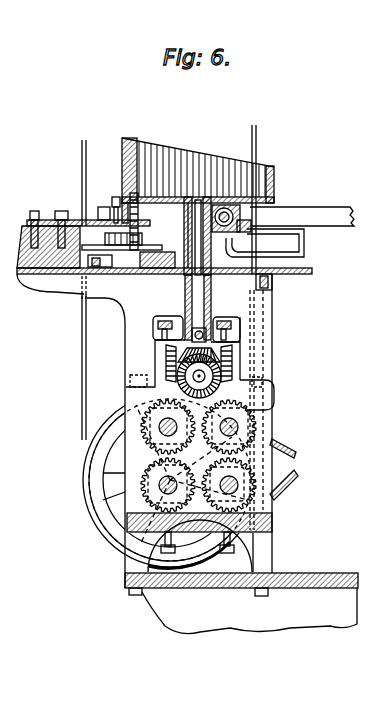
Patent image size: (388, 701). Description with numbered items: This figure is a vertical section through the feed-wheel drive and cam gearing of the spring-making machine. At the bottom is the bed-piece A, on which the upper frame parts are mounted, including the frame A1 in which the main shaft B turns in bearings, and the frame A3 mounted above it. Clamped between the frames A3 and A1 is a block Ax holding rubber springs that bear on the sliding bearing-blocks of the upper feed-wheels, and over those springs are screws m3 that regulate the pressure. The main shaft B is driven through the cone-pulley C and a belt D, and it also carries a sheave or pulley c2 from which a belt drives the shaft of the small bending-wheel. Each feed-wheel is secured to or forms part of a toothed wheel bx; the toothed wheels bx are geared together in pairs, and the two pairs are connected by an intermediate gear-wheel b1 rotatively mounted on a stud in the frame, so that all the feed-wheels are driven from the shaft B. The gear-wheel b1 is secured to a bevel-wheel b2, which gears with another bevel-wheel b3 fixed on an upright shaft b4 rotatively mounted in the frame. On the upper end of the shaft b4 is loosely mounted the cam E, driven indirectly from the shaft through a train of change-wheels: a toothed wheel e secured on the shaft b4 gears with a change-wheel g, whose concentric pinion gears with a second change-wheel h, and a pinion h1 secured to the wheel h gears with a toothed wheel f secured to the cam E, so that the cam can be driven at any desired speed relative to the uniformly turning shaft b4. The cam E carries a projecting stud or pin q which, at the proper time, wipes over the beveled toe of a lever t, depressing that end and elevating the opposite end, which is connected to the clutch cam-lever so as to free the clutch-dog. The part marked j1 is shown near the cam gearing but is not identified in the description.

The cam E is at (198, 200).
The lever t is at (302, 208).
The toothed wheel f is at (249, 229).
The toothed wheel e is at (244, 250).
The change-wheel g is at (164, 249).
The change-wheel h is at (128, 250).
The pinion h1 is at (150, 221).
The stud or pin q is at (116, 197).
The adjusting block j1 is at (108, 204).
The upright shaft b4 is at (212, 287).
The bevel-wheel b3 is at (170, 322).
The belt D is at (82, 348).
The frame A3 is at (273, 297).
The block Ax is at (276, 390).
The screws m3 is at (157, 327).
The intermediate gear-wheel b1 is at (172, 372).
The bevel-wheel b2 is at (229, 366).
The main shaft B is at (198, 456).
The toothed wheel bx is at (132, 407).
The sheave or pulley c2 is at (72, 508).
The cone-pulley C is at (170, 482).
The frame A1 is at (271, 517).
The bed-piece A is at (241, 603).